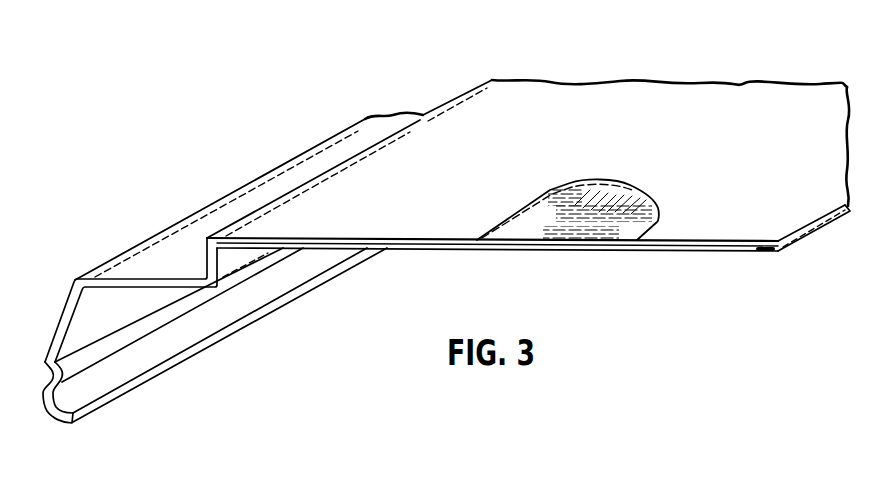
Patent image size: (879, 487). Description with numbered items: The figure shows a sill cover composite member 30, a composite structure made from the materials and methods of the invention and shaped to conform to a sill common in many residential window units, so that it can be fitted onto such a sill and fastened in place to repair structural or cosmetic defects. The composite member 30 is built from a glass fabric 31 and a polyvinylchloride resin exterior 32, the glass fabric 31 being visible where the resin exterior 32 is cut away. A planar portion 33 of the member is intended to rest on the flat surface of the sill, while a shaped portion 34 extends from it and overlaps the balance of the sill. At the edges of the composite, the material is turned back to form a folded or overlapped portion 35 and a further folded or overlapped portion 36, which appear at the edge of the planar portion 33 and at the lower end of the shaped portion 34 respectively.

The sill cover composite member 30 is at (622, 64).
The glass fabric 31 is at (587, 238).
The polyvinylchloride resin exterior 32 is at (802, 213).
The planar portion 33 is at (618, 147).
The shaped portion 34 is at (75, 280).
The folded or overlapped portion 35 is at (765, 253).
The folded or overlapped portion 36 is at (63, 417).